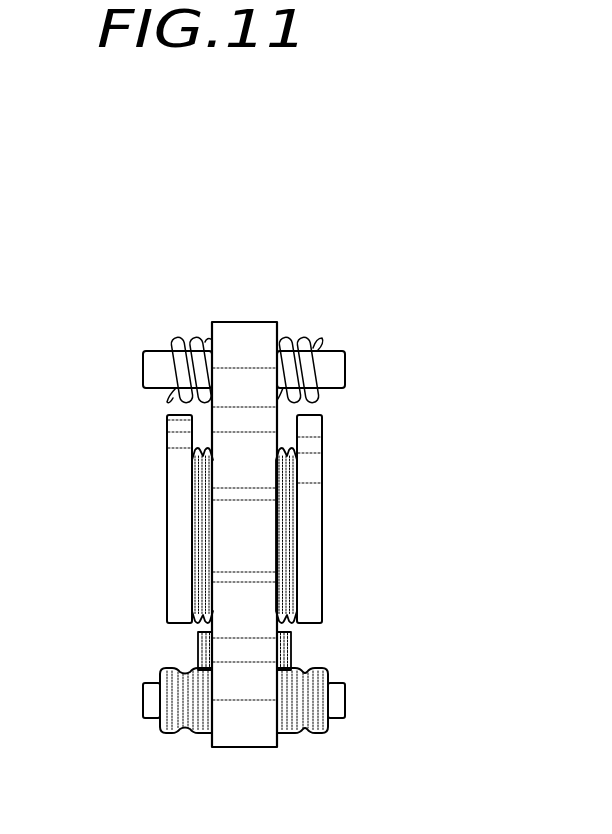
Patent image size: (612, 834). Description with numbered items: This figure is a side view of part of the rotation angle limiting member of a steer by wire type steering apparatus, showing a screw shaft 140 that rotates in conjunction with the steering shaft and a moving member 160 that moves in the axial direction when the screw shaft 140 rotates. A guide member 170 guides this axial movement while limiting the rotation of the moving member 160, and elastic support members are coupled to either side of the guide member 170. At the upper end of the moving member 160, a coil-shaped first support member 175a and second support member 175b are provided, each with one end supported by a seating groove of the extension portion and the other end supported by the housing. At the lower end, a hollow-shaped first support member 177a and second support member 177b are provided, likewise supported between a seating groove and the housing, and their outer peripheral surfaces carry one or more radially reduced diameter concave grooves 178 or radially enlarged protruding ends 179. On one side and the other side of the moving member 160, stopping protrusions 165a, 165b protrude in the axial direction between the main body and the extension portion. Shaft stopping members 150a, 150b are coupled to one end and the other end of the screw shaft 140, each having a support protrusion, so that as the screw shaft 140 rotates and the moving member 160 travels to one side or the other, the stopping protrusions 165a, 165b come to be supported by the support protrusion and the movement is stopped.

The screw shaft 140 is at (193, 487).
The shaft stopping member 150a is at (177, 513).
The shaft stopping member 150b is at (313, 520).
The moving member 160 is at (247, 468).
The stopping protrusion 165a is at (203, 653).
The stopping protrusion 165b is at (278, 660).
The guide member 170 is at (338, 368).
The first support member 175a is at (173, 337).
The second support member 175b is at (300, 338).
The first support member 177a is at (158, 753).
The second support member 177b is at (335, 749).
The concave groove 178 is at (303, 733).
The protruding end 179 is at (198, 733).